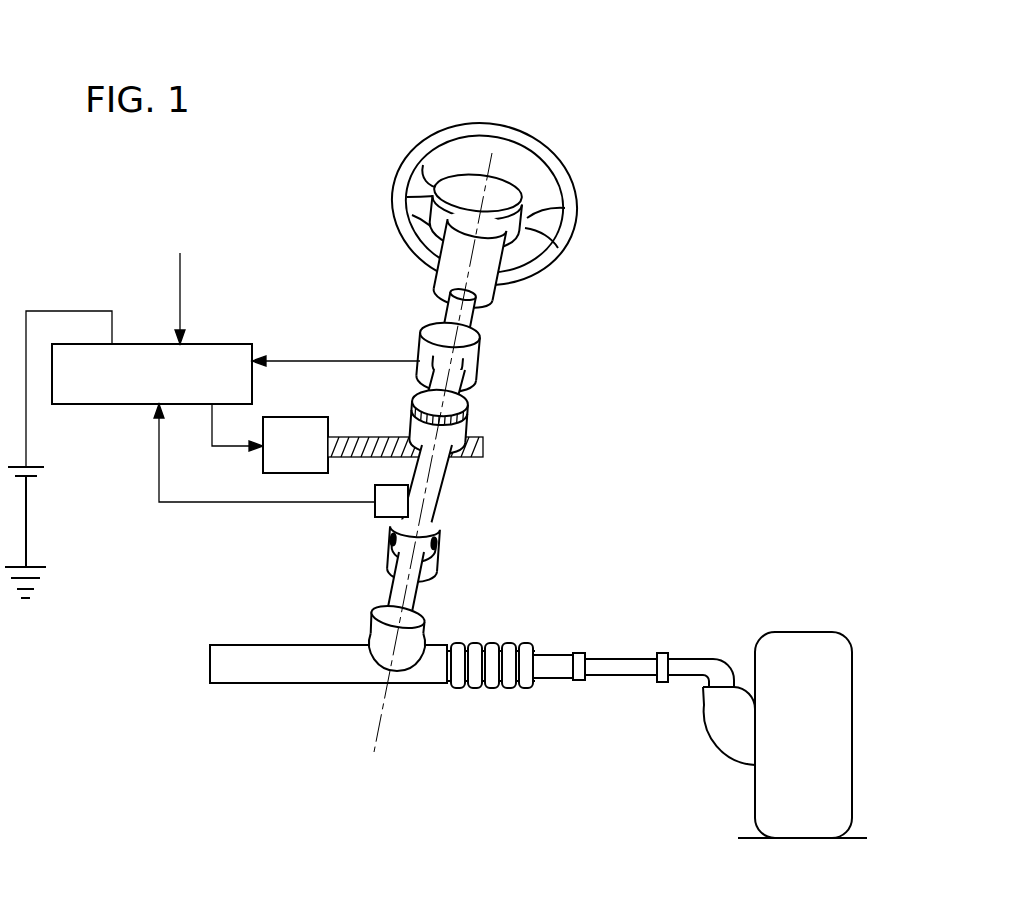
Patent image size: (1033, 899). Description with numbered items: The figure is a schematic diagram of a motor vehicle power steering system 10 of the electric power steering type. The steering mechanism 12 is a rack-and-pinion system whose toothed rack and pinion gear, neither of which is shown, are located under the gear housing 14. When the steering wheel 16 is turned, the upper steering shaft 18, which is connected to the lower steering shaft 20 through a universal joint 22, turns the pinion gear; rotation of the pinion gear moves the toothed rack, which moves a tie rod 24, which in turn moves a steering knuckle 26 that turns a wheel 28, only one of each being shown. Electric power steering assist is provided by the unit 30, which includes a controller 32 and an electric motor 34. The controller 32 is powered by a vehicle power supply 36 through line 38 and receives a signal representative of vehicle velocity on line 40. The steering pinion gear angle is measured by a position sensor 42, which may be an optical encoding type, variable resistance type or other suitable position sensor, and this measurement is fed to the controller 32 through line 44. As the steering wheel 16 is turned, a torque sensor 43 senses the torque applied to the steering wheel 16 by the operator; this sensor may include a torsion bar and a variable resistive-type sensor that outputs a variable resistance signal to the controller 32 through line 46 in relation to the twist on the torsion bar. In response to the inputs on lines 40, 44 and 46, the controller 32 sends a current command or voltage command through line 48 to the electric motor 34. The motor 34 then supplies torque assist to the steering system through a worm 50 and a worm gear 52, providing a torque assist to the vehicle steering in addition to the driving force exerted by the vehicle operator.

The motor vehicle power steering system 10 is at (594, 86).
The steering mechanism 12 is at (490, 643).
The gear housing 14 is at (384, 622).
The steering wheel 16 is at (553, 152).
The upper steering shaft 18 is at (470, 306).
The lower steering shaft 20 is at (412, 594).
The universal joint 22 is at (440, 548).
The tie rod 24 is at (616, 676).
The steering knuckle 26 is at (722, 732).
The wheel 28 is at (807, 638).
The electric power steering assist unit 30 is at (262, 286).
The controller 32 is at (147, 343).
The electric motor 34 is at (298, 417).
The vehicle power supply 36 is at (29, 463).
The line 38 is at (67, 310).
The line 40 is at (181, 282).
The position sensor 42 is at (373, 508).
The torque sensor 43 is at (433, 340).
The line 44 is at (170, 504).
The line 46 is at (316, 359).
The line 48 is at (234, 447).
The worm 50 is at (479, 445).
The worm gear 52 is at (466, 420).